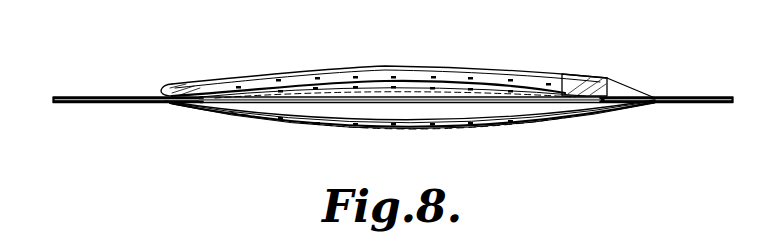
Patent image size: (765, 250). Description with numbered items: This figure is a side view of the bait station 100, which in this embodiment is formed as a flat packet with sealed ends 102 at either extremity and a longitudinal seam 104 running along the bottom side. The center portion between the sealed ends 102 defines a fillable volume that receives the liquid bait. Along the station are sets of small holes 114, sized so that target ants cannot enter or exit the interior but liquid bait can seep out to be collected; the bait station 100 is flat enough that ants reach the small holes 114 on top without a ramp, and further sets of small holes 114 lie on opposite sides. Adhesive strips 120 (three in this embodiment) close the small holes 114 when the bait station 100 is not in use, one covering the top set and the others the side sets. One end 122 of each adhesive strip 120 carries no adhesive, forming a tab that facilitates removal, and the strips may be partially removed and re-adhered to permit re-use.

The bait station 100 is at (689, 64).
The sealed ends 102 is at (58, 96).
The longitudinal seam 104 is at (640, 110).
The small holes 114 is at (242, 87).
The adhesive strips 120 is at (603, 81).
The end of adhesive strip 122 is at (167, 86).